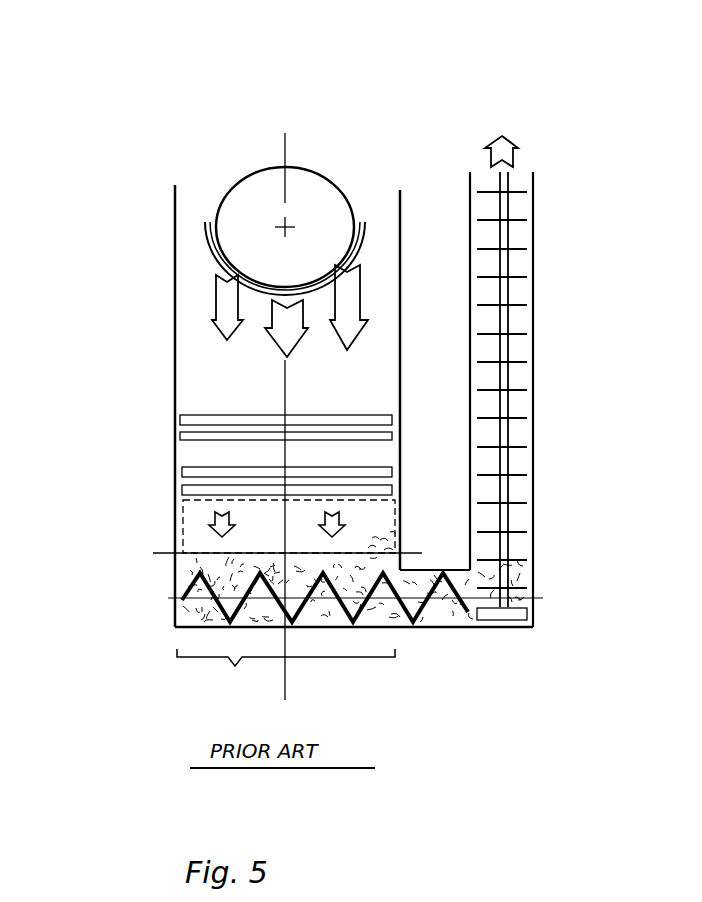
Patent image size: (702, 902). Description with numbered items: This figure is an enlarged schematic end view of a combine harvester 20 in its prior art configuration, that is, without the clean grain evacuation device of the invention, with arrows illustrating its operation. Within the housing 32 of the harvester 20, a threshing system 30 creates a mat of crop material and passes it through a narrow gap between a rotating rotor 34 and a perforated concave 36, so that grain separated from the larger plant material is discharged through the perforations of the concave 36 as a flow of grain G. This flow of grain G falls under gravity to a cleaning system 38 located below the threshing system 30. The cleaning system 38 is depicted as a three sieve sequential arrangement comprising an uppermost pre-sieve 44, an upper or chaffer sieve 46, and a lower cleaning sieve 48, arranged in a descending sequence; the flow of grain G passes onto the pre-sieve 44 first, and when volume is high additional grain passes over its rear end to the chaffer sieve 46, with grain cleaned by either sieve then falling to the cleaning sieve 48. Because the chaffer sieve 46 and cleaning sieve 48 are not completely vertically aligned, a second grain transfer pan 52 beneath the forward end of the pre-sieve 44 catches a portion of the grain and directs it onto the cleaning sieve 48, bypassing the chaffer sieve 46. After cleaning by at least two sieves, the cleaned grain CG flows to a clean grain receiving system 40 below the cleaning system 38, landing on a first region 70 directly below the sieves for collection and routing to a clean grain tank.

The combine harvester 20 is at (530, 85).
The threshing system 30 is at (325, 172).
The housing 32 is at (173, 333).
The rotor 34 is at (342, 195).
The perforated concave 36 is at (205, 240).
The cleaning system 38 is at (176, 406).
The clean grain receiving system 40 is at (174, 621).
The pre-sieve 44 is at (378, 415).
The chaffer sieve 46 is at (392, 490).
The cleaning sieve 48 is at (178, 483).
The second grain transfer pan 52 is at (186, 465).
The first region 70 is at (286, 672).
The flow of grain G is at (283, 338).
The cleaned grain flow CG is at (208, 516).